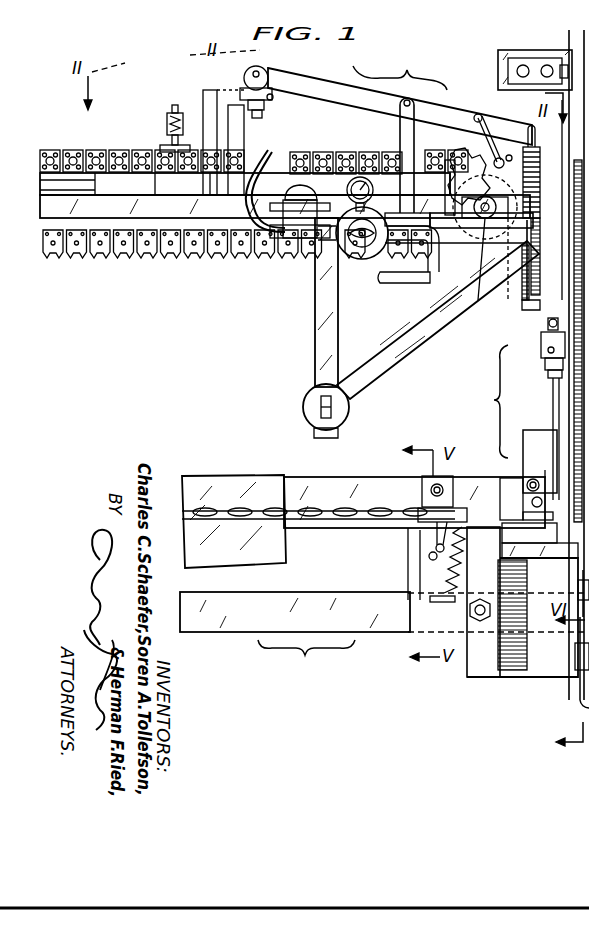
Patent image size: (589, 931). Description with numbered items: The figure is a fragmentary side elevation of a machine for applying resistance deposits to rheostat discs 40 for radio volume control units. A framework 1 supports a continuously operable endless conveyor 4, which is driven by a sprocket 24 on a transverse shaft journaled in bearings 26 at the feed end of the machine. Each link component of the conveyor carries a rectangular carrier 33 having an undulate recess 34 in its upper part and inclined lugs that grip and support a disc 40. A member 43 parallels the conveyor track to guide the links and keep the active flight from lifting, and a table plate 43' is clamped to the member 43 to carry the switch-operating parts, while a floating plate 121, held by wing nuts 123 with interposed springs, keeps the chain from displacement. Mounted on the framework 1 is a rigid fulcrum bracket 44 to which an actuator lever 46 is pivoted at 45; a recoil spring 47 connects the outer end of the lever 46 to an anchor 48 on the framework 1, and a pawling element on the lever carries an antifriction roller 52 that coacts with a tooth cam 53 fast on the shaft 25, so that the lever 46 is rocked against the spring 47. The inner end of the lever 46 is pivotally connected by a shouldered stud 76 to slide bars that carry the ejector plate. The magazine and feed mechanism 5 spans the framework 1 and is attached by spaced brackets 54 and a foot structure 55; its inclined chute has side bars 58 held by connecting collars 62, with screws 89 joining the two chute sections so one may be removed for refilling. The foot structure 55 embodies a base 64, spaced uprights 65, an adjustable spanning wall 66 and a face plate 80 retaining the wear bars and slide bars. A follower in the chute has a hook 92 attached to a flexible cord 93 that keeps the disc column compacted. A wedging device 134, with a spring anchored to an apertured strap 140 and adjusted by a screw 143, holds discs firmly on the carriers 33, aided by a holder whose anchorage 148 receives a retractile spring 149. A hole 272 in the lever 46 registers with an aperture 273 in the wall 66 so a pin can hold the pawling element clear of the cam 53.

The framework 1 is at (315, 350).
The conveyor 4 is at (95, 180).
The magazine and feed mechanism 5 is at (430, 252).
The sprocket 24 is at (520, 282).
The shaft 25 is at (477, 269).
The bearings 26 is at (533, 220).
The carrier 33 is at (228, 258).
The undulate recess 34 is at (120, 150).
The rheostat discs 40 is at (200, 525).
The member 43 is at (414, 490).
The table plate 43' is at (536, 464).
The fulcrum bracket 44 is at (400, 136).
The pivot 45 is at (400, 104).
The actuator lever 46 is at (332, 88).
The recoil spring 47 is at (531, 265).
The anchor 48 is at (527, 305).
The antifriction roller 52 is at (485, 207).
The tooth cam 53 is at (465, 160).
The brackets 54 is at (498, 66).
The foot structure 55 is at (537, 670).
The side bars 58 is at (540, 160).
The connecting collars 62 is at (548, 352).
The base 64 is at (562, 369).
The uprights 65 is at (497, 644).
The spanning wall 66 is at (203, 92).
The shouldered stud 76 is at (576, 545).
The face plate 80 is at (483, 602).
The screws 89 is at (553, 318).
The hook 92 is at (535, 133).
The flexible cord 93 is at (565, 394).
The floating plate 121 is at (540, 464).
The wing nuts 123 is at (537, 523).
The wedging device 134 is at (165, 122).
The apertured strap 140 is at (455, 535).
The screw 143 is at (430, 508).
The anchorage 148 is at (455, 602).
The retractile spring 149 is at (440, 576).
The hole 272 is at (290, 66).
The aperture 273 is at (268, 100).